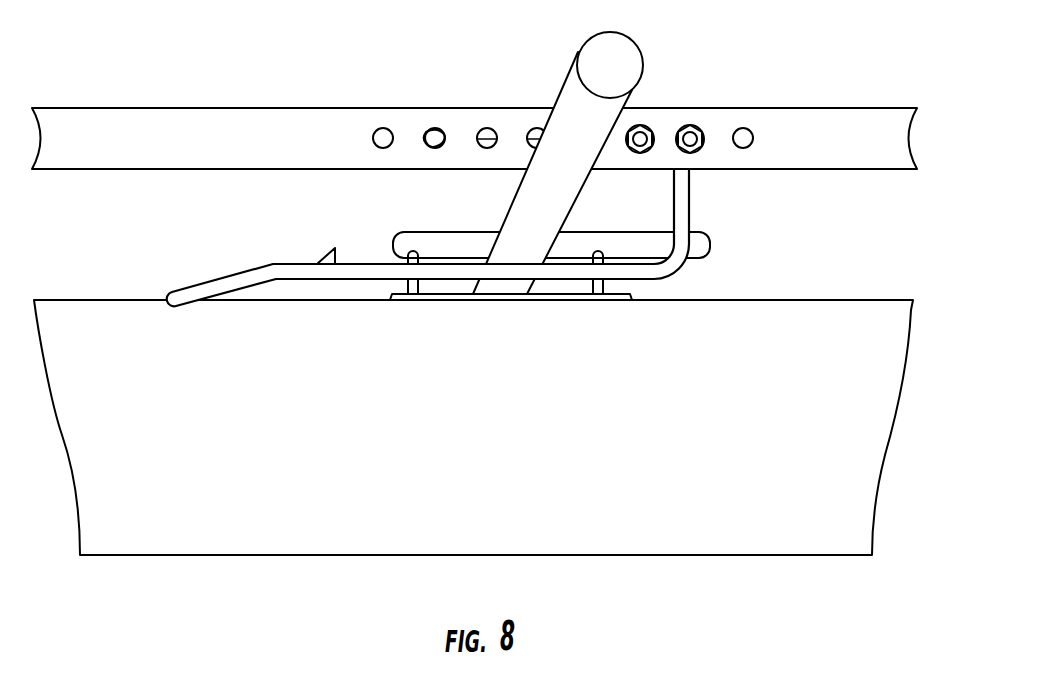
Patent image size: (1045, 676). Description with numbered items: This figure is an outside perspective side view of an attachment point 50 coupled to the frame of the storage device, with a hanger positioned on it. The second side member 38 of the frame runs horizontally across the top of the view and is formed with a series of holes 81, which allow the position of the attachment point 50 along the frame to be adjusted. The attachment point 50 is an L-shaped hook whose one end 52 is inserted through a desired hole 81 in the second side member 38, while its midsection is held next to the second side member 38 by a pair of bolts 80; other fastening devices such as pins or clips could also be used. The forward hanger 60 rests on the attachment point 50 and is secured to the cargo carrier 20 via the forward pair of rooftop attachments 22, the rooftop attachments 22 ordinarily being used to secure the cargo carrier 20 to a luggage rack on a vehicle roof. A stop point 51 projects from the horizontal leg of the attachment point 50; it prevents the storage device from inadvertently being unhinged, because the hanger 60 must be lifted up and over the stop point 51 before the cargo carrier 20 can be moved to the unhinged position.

The cargo carrier 20 is at (847, 440).
The forward pair of rooftop attachments 22 is at (440, 232).
The second side member 38 is at (143, 130).
The attachment point 50 is at (692, 192).
The stop point 51 is at (320, 260).
The end of the attachment point 52 is at (428, 148).
The forward hanger 60 is at (565, 93).
The bolts 80 is at (690, 126).
The holes 81 is at (440, 135).